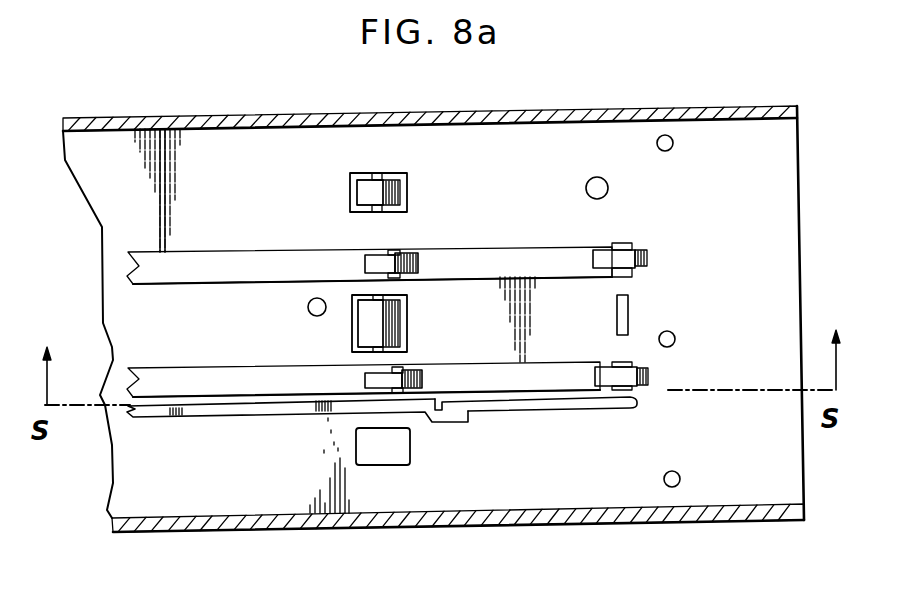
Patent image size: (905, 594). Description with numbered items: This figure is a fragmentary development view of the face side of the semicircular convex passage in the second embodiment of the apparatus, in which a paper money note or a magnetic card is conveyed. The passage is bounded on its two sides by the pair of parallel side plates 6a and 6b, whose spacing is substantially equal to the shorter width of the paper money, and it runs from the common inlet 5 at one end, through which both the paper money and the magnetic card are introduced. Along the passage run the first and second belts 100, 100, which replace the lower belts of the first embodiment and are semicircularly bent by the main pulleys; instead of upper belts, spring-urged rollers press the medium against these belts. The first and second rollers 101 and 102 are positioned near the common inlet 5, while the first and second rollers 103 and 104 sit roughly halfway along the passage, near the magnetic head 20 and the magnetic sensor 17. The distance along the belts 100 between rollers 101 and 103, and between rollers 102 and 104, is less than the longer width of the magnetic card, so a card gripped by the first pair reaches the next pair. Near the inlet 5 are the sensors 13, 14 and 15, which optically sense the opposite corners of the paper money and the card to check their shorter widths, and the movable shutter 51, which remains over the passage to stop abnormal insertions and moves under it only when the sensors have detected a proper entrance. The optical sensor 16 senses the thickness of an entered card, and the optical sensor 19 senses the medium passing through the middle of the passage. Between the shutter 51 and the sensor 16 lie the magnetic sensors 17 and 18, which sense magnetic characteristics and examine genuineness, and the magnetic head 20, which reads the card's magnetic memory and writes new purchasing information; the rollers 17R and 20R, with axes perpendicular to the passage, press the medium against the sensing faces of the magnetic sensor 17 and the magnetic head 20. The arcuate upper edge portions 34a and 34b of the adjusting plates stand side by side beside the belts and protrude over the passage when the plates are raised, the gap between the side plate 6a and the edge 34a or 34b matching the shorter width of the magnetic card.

The common inlet 5 is at (771, 267).
The side plate 6a is at (232, 118).
The side plate 6b is at (312, 532).
The sensor 13 is at (673, 138).
The sensor 14 is at (675, 334).
The sensor 15 is at (678, 471).
The optical sensor 16 is at (586, 188).
The magnetic sensor 17 is at (408, 190).
The roller 17R is at (358, 190).
The magnetic sensor 18 is at (397, 465).
The optical sensor 19 is at (308, 307).
The magnetic head 20 is at (407, 333).
The roller 20R is at (368, 323).
The arcuate upper edge portion 34a is at (554, 410).
The arcuate upper edge portion 34b is at (192, 418).
The movable shutter 51 is at (617, 310).
The belt 100 is at (244, 262).
The first roller 101 is at (647, 258).
The second roller 102 is at (650, 374).
The first roller 103 is at (408, 255).
The second roller 104 is at (415, 372).